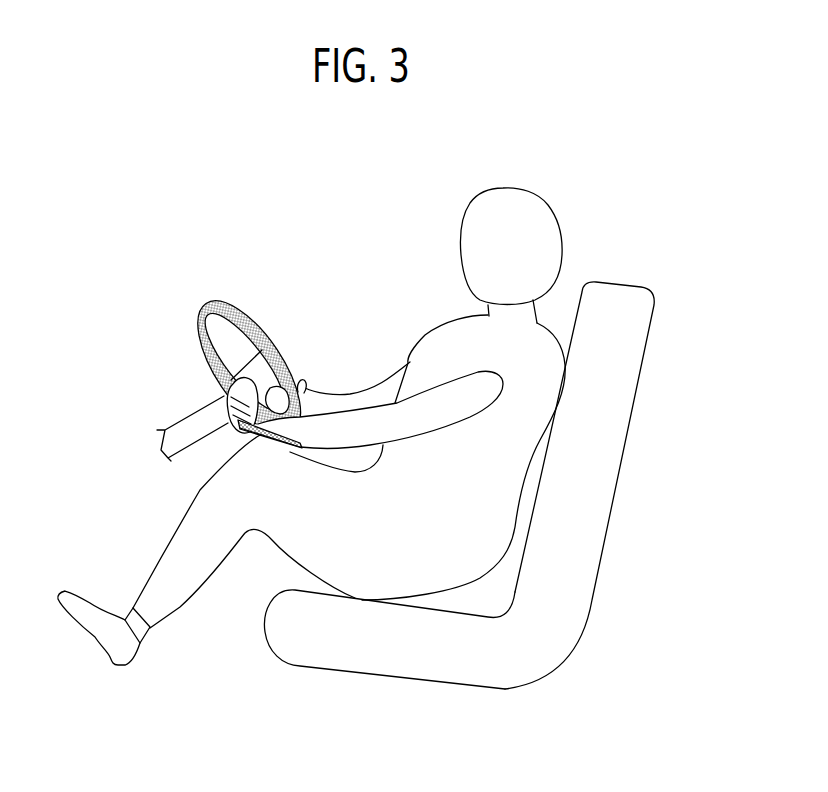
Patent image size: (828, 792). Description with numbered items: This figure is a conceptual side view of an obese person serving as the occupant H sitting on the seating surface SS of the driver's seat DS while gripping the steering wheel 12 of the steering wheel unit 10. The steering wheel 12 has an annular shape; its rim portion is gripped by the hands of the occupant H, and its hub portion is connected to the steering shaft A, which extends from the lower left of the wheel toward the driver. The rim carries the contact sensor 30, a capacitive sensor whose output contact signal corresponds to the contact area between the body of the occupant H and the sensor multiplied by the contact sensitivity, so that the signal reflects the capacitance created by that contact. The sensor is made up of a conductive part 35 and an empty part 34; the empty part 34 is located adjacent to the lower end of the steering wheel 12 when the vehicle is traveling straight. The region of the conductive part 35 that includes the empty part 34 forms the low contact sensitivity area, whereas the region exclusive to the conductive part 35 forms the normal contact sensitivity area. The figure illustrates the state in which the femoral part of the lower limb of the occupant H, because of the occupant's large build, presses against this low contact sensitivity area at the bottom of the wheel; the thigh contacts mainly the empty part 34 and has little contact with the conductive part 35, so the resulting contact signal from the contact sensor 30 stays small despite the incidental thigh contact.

The steering wheel unit 10 is at (152, 188).
The steering wheel 12 is at (200, 310).
The contact sensor 30 is at (222, 302).
The empty part 34 is at (287, 449).
The conductive part 35 is at (247, 318).
The steering shaft A is at (180, 418).
The occupant H is at (512, 207).
The driver's seat DS is at (593, 474).
The seating surface SS is at (362, 600).